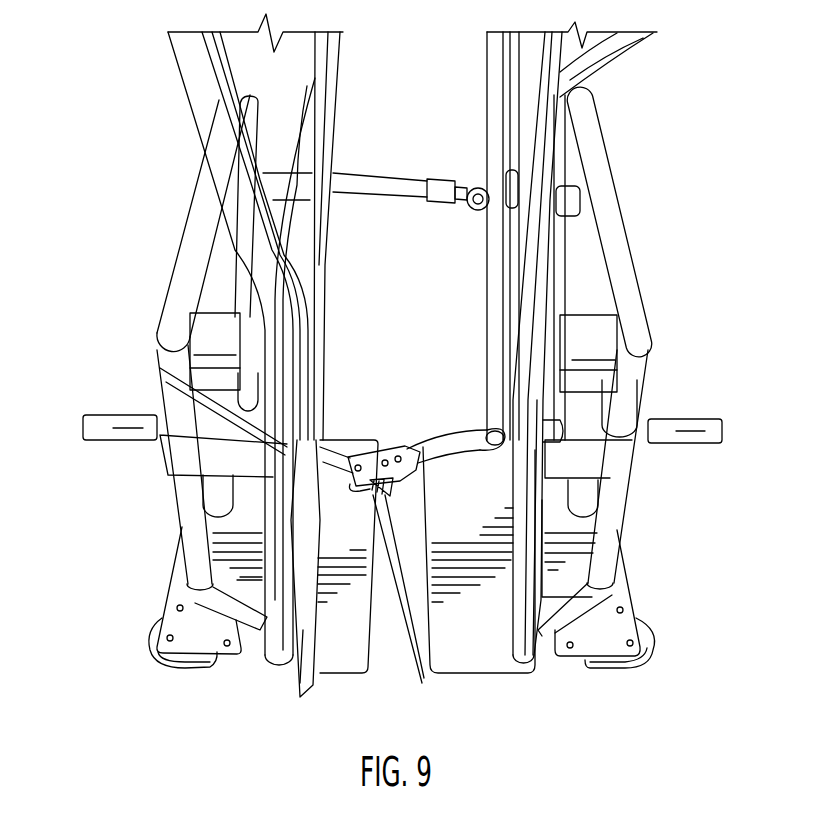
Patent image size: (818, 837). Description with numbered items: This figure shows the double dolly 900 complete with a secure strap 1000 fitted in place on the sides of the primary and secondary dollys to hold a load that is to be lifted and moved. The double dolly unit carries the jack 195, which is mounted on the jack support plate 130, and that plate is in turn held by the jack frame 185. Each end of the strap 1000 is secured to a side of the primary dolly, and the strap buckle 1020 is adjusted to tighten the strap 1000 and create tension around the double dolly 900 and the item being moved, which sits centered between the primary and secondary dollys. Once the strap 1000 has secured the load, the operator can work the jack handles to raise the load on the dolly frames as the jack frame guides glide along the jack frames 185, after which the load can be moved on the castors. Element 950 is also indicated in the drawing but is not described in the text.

The support tube 185 is at (203, 240).
The strap 195 is at (213, 400).
The waist belt 1000 is at (230, 438).
The foot bracket 130 is at (213, 636).
The strap end 1020 is at (415, 608).
The harness assembly 900 is at (514, 700).
The belt segment 950 is at (573, 443).